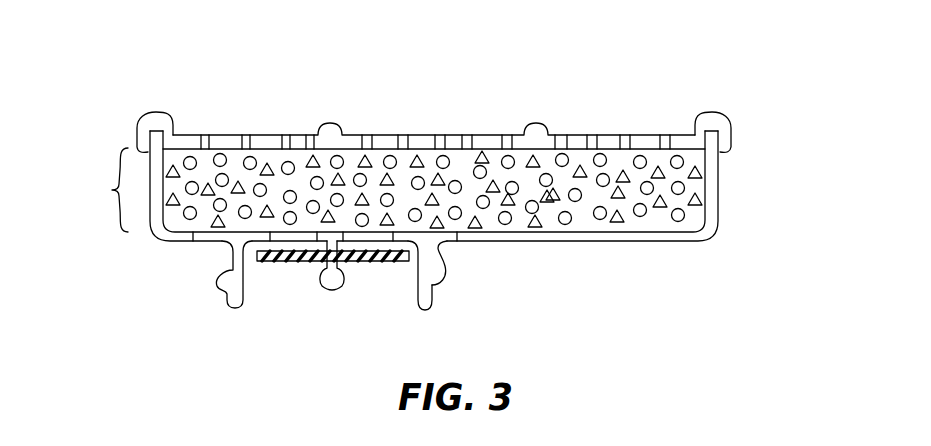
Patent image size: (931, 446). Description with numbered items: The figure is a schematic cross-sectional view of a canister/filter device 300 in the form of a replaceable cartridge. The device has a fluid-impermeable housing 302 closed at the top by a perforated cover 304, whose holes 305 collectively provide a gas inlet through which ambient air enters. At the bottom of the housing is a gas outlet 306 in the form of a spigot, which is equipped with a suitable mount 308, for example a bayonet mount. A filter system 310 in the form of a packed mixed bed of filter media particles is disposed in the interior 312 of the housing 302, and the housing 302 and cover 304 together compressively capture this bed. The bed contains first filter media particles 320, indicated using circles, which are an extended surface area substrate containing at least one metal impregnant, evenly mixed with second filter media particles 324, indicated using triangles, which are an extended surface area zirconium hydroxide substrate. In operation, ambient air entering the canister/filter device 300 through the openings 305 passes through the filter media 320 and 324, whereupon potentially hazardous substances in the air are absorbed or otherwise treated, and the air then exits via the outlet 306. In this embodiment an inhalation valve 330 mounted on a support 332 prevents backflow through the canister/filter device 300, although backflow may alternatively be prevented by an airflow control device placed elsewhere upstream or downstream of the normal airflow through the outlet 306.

The canister/filter device 300 is at (651, 80).
The housing 302 is at (711, 192).
The perforated cover 304 is at (186, 136).
The holes 305 is at (507, 140).
The gas outlet 306 is at (412, 290).
The mount 308 is at (441, 282).
The filter system 310 is at (95, 190).
The interior 312 is at (696, 155).
The first filter media particles 320 is at (284, 163).
The second filter media particles 324 is at (413, 156).
The inhalation valve 330 is at (280, 263).
The support 332 is at (332, 289).